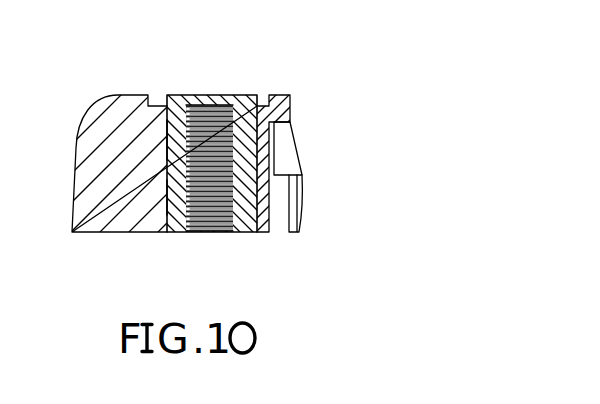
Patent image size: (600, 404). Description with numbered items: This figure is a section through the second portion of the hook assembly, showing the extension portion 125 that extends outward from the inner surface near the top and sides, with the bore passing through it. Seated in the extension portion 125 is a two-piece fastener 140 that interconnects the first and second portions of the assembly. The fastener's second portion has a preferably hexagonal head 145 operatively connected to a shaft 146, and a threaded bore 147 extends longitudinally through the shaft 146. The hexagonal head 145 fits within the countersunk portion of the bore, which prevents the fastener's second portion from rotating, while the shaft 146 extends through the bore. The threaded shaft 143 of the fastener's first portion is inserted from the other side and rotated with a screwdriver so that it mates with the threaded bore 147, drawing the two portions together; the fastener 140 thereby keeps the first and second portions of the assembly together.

The extension portion 125 is at (111, 104).
The two-piece fastener 140 is at (252, 40).
The threaded shaft 143 is at (208, 228).
The head 145 is at (171, 95).
The shaft 146 is at (175, 143).
The threaded bore 147 is at (190, 172).